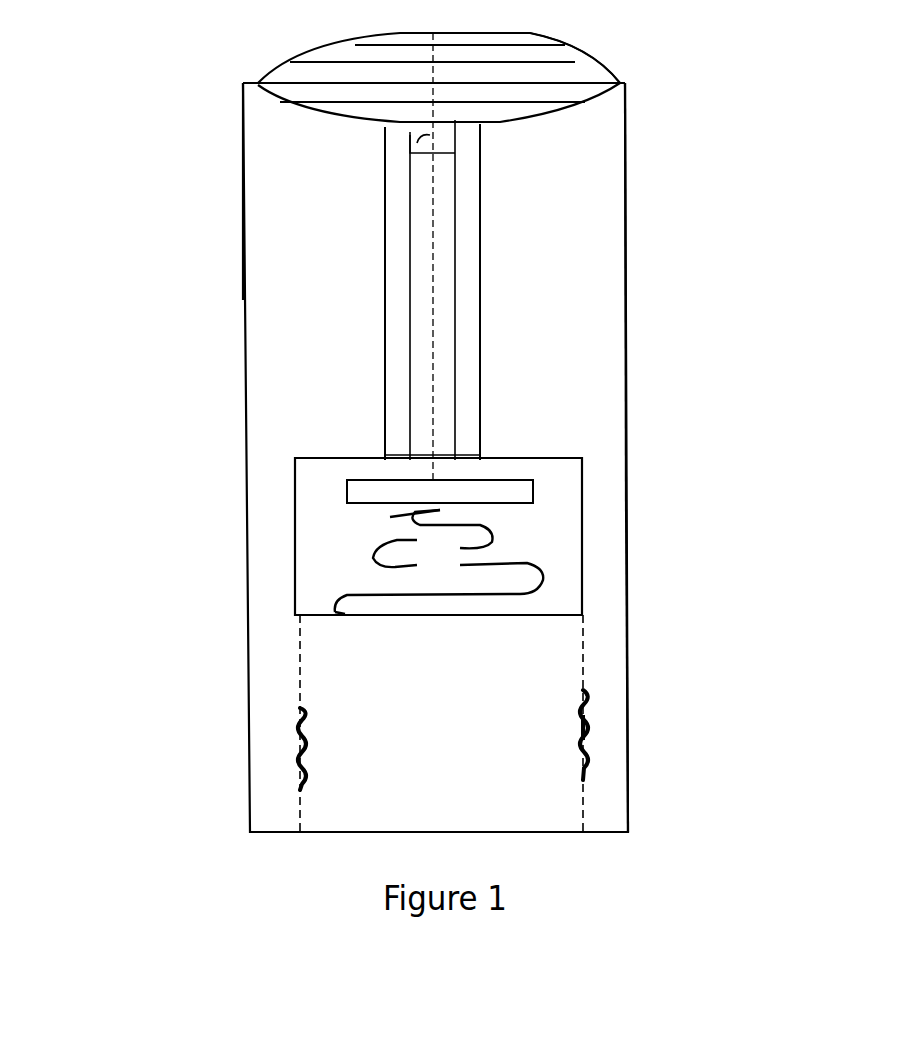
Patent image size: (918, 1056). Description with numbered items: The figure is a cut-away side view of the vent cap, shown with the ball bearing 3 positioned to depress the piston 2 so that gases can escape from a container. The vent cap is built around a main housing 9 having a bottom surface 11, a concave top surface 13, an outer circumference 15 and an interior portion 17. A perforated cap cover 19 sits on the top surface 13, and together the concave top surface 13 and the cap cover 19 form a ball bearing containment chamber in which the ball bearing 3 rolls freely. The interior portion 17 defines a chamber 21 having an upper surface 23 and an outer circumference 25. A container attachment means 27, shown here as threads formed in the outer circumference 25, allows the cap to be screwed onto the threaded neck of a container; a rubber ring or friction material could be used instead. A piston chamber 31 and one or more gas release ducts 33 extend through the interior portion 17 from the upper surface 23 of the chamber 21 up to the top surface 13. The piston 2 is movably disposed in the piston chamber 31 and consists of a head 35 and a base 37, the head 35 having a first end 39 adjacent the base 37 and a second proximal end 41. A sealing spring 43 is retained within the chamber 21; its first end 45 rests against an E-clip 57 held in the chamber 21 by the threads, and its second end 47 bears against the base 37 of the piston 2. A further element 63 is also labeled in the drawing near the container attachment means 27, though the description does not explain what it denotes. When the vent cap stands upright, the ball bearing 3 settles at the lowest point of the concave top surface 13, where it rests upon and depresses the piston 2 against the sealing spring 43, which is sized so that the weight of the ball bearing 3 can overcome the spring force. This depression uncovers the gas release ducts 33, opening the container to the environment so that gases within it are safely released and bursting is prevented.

The piston 2 is at (420, 320).
The ball bearing 3 is at (385, 76).
The main housing 9 is at (643, 318).
The bottom surface 11 is at (262, 818).
The concave top surface 13 is at (267, 108).
The outer circumference 15 is at (645, 677).
The interior portion 17 is at (572, 262).
The cap cover 19 is at (610, 52).
The chamber 21 is at (441, 804).
The upper surface 23 is at (283, 460).
The outer circumference 25 is at (564, 650).
The container attachment means 27 is at (322, 770).
The piston chamber 31 is at (395, 233).
The gas release ducts 33 is at (480, 242).
The head 35 is at (425, 257).
The base 37 is at (480, 487).
The first end 39 is at (390, 457).
The second proximal end 41 is at (440, 140).
The sealing spring 43 is at (439, 561).
The first end 45 is at (328, 597).
The second end 47 is at (390, 517).
The E-clip 57 is at (402, 638).
The spring contact 63 is at (592, 727).